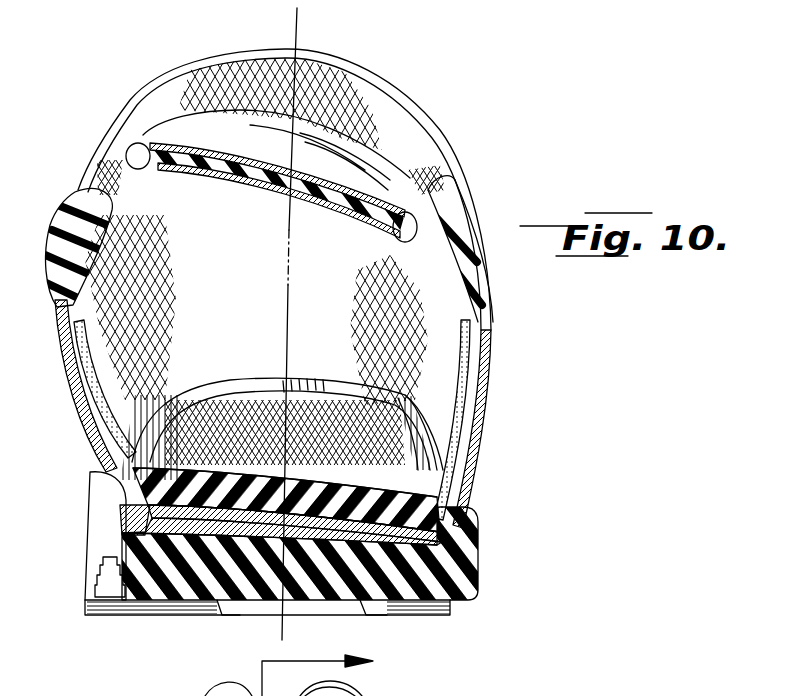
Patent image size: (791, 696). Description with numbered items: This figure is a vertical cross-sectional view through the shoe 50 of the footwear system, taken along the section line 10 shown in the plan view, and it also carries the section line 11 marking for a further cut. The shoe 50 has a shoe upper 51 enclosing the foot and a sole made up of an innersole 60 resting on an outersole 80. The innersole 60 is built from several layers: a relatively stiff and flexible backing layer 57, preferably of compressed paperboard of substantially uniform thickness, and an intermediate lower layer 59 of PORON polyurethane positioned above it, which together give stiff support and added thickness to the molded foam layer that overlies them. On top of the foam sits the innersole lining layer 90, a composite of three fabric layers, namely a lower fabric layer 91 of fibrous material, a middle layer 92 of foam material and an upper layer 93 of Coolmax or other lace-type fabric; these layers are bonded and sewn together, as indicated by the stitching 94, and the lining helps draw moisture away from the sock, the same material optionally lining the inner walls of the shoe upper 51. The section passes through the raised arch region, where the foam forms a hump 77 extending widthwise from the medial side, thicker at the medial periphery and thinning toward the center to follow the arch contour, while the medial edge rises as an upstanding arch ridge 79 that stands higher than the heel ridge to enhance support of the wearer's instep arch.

The section line 10 is at (336, 673).
The section line 11 is at (297, 8).
The shoe 50 is at (300, 348).
The shoe upper 51 is at (492, 346).
The backing layer 57 is at (473, 557).
The intermediate lower layer 59 is at (470, 528).
The innersole 60 is at (281, 373).
The hump 77 is at (458, 507).
The upstanding arch ridge 79 is at (125, 463).
The outersole 80 is at (430, 592).
The innersole lining layer 90 is at (408, 467).
The lower fabric layer 91 is at (425, 494).
The middle layer 92 is at (450, 450).
The upper layer 93 is at (445, 462).
The stitching 94 is at (327, 385).